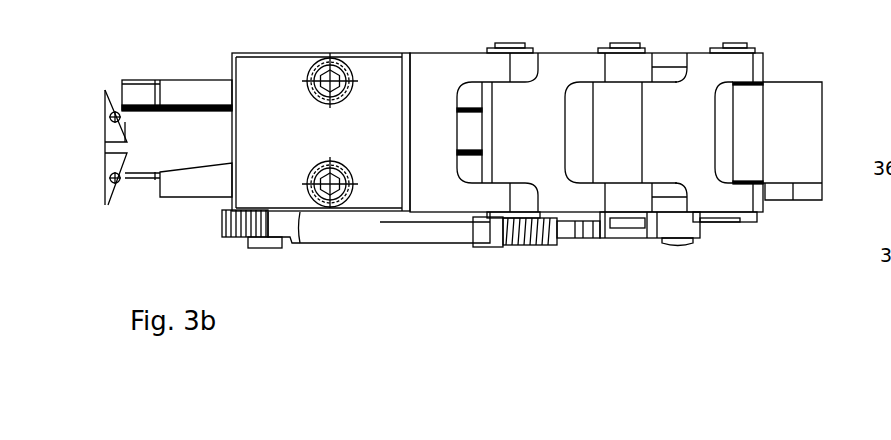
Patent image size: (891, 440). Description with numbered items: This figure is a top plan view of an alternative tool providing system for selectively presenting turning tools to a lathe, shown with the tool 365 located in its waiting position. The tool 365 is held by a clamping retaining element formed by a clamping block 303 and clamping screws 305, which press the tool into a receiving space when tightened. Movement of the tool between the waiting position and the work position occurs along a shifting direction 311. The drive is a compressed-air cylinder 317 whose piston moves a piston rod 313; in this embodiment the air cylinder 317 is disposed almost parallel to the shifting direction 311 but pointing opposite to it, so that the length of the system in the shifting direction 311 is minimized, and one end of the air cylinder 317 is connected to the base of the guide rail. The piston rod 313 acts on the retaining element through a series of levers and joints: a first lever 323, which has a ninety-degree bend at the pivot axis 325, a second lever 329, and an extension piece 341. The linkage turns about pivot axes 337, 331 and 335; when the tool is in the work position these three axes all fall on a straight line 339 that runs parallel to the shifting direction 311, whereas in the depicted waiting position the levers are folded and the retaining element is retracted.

The clamping block 303 is at (290, 157).
The clamping screws 305 is at (331, 103).
The shifting direction 311 is at (220, 277).
The piston rod 313 is at (562, 228).
The air cylinder 317 is at (392, 244).
The first lever 323 is at (673, 148).
The pivot axis 325 is at (679, 250).
The second lever 329 is at (535, 145).
The pivot axis 331 is at (621, 12).
The pivot axis 335 is at (513, 14).
The pivot axis 337 is at (733, 14).
The straight line 339 is at (819, 141).
The extension piece 341 is at (445, 118).
The tool 365 is at (103, 200).